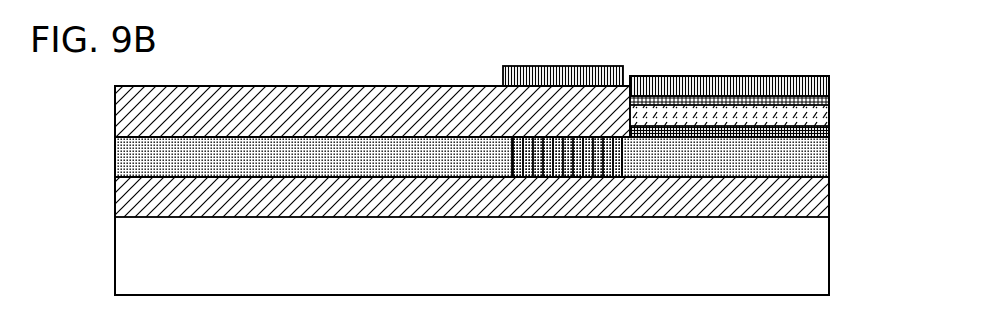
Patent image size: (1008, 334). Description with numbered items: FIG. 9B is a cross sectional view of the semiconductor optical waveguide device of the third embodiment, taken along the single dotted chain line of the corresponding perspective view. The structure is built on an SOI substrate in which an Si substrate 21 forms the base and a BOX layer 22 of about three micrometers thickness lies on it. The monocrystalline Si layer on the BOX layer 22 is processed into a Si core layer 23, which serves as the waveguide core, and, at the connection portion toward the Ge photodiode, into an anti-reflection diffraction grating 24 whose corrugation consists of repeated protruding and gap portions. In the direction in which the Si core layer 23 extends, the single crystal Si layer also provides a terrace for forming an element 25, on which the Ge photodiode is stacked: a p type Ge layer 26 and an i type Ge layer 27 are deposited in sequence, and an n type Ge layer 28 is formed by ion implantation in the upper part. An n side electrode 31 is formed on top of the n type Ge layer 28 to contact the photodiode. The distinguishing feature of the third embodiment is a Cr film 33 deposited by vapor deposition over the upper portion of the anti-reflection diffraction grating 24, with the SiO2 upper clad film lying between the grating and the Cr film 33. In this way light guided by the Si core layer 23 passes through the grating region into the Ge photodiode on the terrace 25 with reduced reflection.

The Si substrate 21 is at (822, 248).
The BOX layer 22 is at (820, 197).
The Si core layer 23 is at (284, 163).
The anti-reflection diffraction grating 24 is at (623, 223).
The terrace for forming an element 25 is at (830, 157).
The p type Ge layer 26 is at (830, 130).
The i type Ge layer 27 is at (830, 113).
The n type Ge layer 28 is at (830, 93).
The n side electrode 31 is at (752, 76).
The Cr film 33 is at (561, 66).